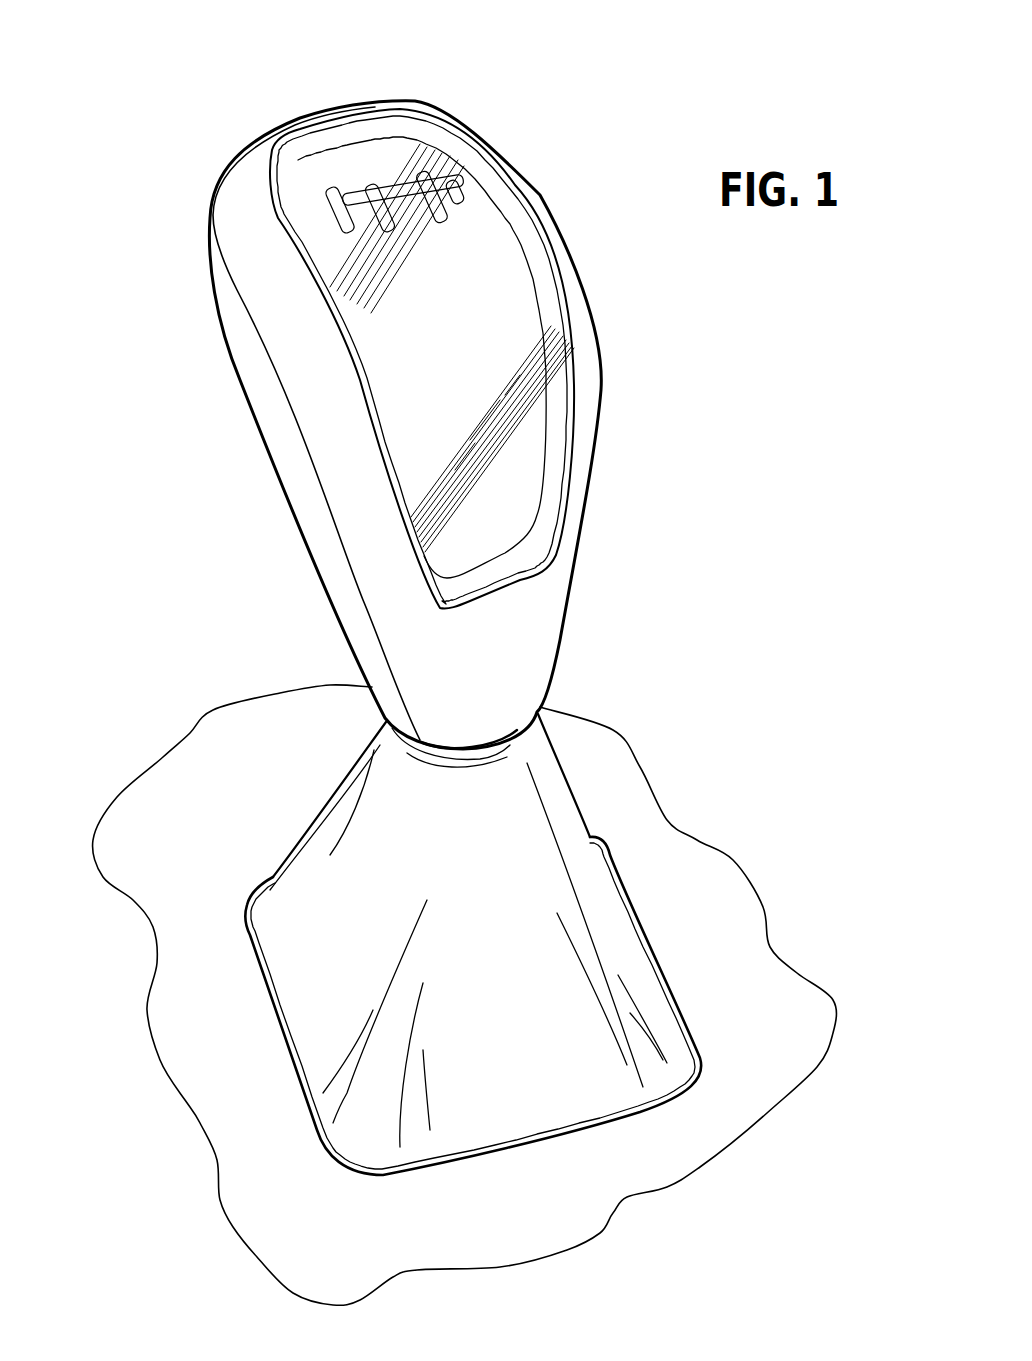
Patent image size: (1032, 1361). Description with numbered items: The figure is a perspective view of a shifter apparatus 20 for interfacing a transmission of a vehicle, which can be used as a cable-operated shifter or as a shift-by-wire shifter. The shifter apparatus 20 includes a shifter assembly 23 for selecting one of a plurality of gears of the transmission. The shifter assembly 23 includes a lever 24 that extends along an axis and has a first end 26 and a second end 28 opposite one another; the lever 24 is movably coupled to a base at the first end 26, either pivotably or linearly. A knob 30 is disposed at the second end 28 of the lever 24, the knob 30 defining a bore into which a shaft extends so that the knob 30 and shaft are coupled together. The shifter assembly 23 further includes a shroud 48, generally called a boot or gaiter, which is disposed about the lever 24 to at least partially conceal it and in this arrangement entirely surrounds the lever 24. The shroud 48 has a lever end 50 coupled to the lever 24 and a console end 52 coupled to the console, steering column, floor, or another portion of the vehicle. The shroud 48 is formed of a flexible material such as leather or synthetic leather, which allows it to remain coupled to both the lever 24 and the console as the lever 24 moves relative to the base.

The shifter apparatus 20 is at (150, 126).
The shifter assembly 23 is at (220, 418).
The lever 24 is at (310, 746).
The first end 26 is at (685, 931).
The second end 28 is at (502, 88).
The knob 30 is at (604, 357).
The shroud 48 is at (570, 840).
The lever end 50 is at (508, 742).
The console end 52 is at (678, 1075).